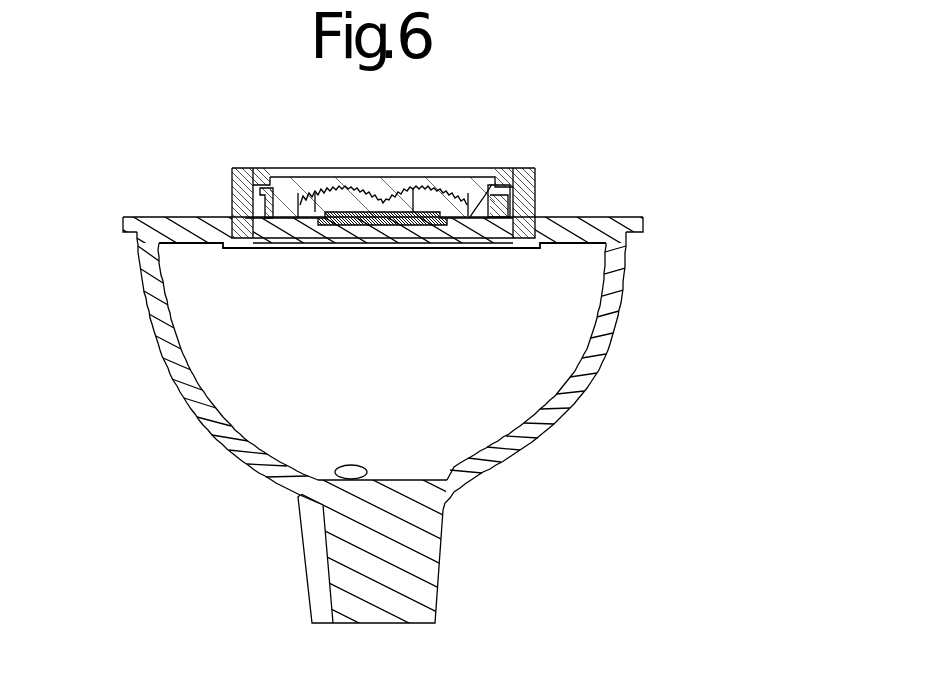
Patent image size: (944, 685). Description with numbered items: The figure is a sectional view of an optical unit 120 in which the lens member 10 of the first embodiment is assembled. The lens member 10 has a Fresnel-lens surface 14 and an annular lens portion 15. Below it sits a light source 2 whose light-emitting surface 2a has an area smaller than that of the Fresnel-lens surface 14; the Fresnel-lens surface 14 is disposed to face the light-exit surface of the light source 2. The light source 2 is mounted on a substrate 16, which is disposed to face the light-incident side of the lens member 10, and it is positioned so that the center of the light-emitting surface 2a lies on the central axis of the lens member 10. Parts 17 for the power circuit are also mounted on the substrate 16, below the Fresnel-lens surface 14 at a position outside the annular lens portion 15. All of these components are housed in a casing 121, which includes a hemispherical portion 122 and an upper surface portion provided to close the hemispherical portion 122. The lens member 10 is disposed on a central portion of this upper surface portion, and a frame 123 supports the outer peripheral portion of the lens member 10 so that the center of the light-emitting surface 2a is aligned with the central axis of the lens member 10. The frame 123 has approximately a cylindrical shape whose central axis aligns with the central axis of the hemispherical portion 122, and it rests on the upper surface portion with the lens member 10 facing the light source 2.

The light source 2 is at (377, 227).
The light-emitting surface 2a is at (414, 198).
The lens member 10 is at (442, 168).
The Fresnel-lens surface 14 is at (297, 220).
The annular lens portion 15 is at (480, 216).
The substrate 16 is at (270, 232).
The parts for the power circuit 17 is at (262, 202).
The optical unit 120 is at (472, 342).
The casing 121 is at (604, 364).
The hemispherical portion 122 is at (569, 414).
The frame 123 is at (233, 169).